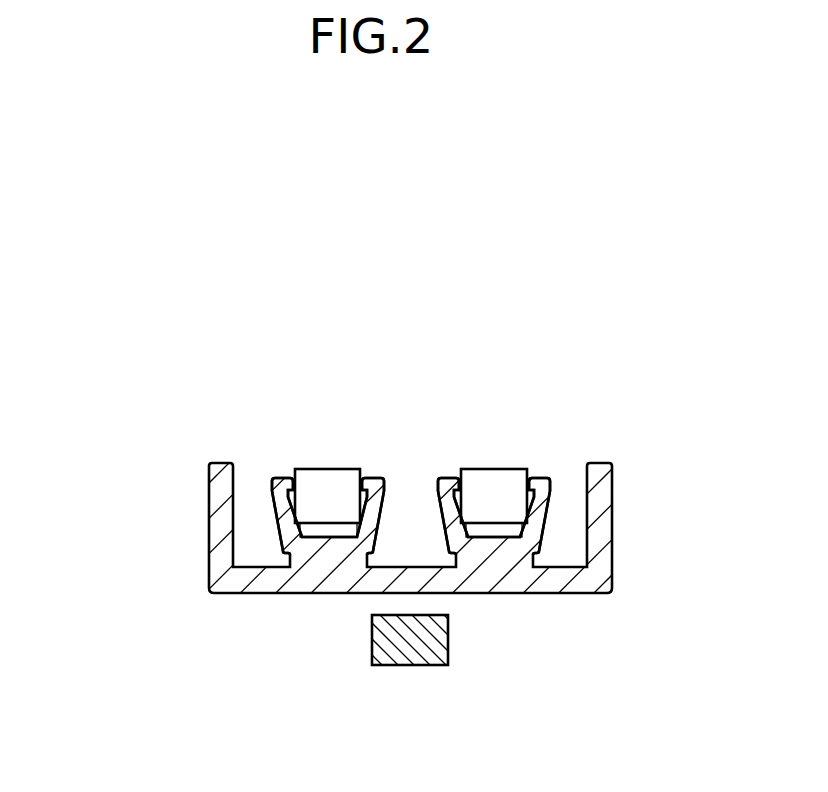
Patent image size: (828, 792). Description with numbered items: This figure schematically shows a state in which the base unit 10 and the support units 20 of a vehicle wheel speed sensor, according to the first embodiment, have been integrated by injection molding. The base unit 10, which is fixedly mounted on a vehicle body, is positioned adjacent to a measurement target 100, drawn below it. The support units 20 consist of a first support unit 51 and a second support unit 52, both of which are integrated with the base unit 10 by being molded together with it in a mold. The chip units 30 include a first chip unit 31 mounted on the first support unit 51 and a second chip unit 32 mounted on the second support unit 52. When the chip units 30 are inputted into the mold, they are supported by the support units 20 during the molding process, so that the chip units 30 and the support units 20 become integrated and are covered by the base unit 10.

The base unit 10 is at (608, 497).
The support units 20 is at (395, 380).
The first support unit 51 is at (372, 488).
The second support unit 52 is at (443, 486).
The chip units 30 is at (102, 535).
The first chip unit 31 is at (315, 505).
The second chip unit 32 is at (487, 507).
The measurement target 100 is at (415, 655).